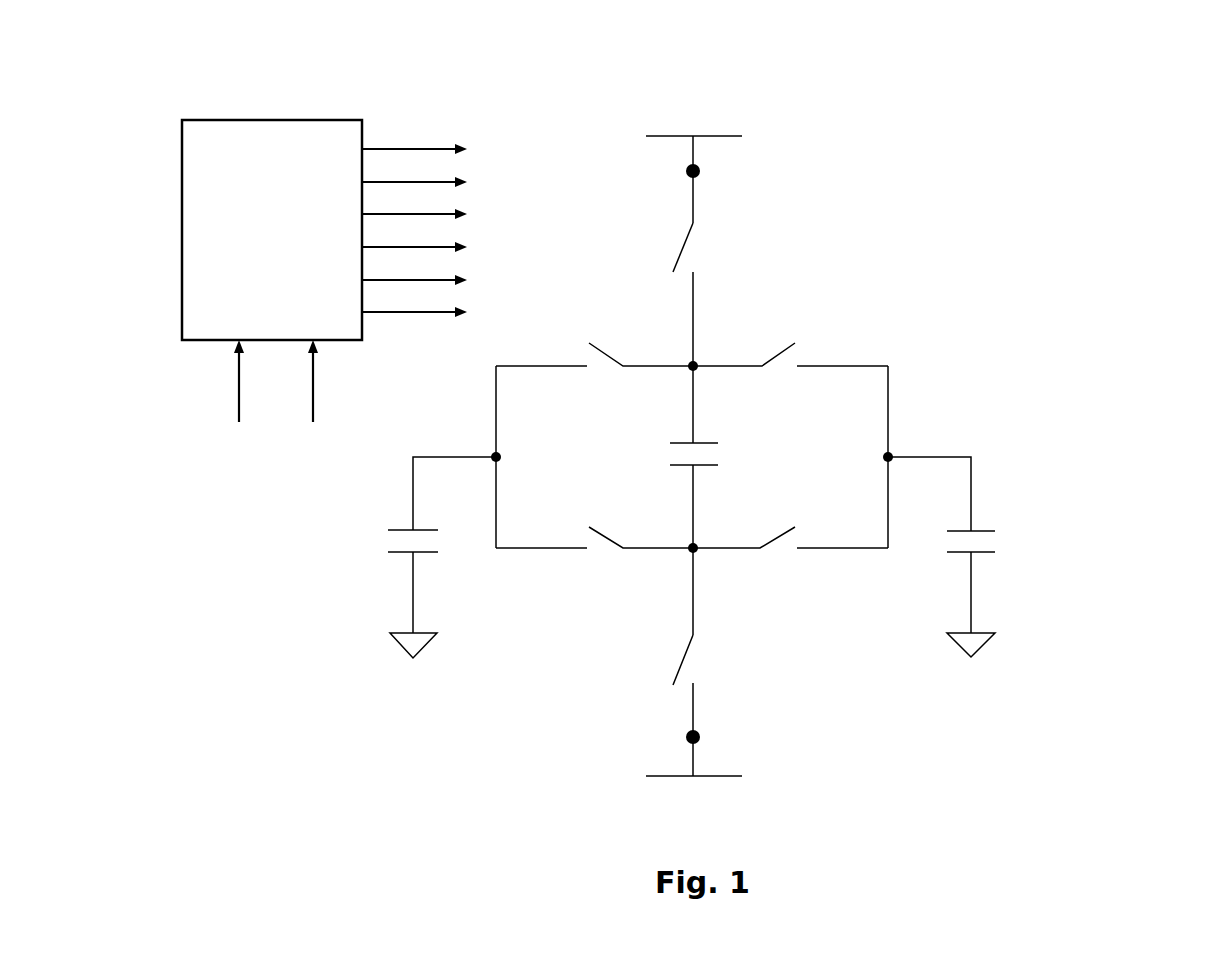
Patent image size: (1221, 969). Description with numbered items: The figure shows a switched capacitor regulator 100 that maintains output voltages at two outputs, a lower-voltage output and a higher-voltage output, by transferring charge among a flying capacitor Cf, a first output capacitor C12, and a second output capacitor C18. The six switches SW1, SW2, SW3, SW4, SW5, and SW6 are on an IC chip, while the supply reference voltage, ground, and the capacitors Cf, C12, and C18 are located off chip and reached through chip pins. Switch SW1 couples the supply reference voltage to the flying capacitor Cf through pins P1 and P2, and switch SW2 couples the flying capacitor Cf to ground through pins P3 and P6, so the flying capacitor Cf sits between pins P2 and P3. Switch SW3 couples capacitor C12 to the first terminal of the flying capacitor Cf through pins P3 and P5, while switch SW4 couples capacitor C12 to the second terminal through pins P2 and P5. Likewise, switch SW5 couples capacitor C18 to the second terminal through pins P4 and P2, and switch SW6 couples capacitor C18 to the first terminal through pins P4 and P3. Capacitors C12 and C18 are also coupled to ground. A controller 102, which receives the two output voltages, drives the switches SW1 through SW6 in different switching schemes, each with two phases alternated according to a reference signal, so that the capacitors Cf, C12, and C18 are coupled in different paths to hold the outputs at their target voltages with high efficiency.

The regulator 100 is at (1220, 95).
The controller 102 is at (205, 120).
The switch SW1 is at (710, 247).
The switch SW2 is at (710, 660).
The switch SW3 is at (790, 554).
The switch SW4 is at (790, 371).
The switch SW5 is at (594, 371).
The switch SW6 is at (594, 554).
The flying capacitor Cf is at (710, 453).
The second output capacitor C18 is at (442, 512).
The first output capacitor C12 is at (941, 511).
The pin P1 is at (712, 171).
The pin P2 is at (708, 351).
The pin P3 is at (708, 535).
The pin P4 is at (512, 458).
The pin P5 is at (872, 458).
The pin P6 is at (712, 736).